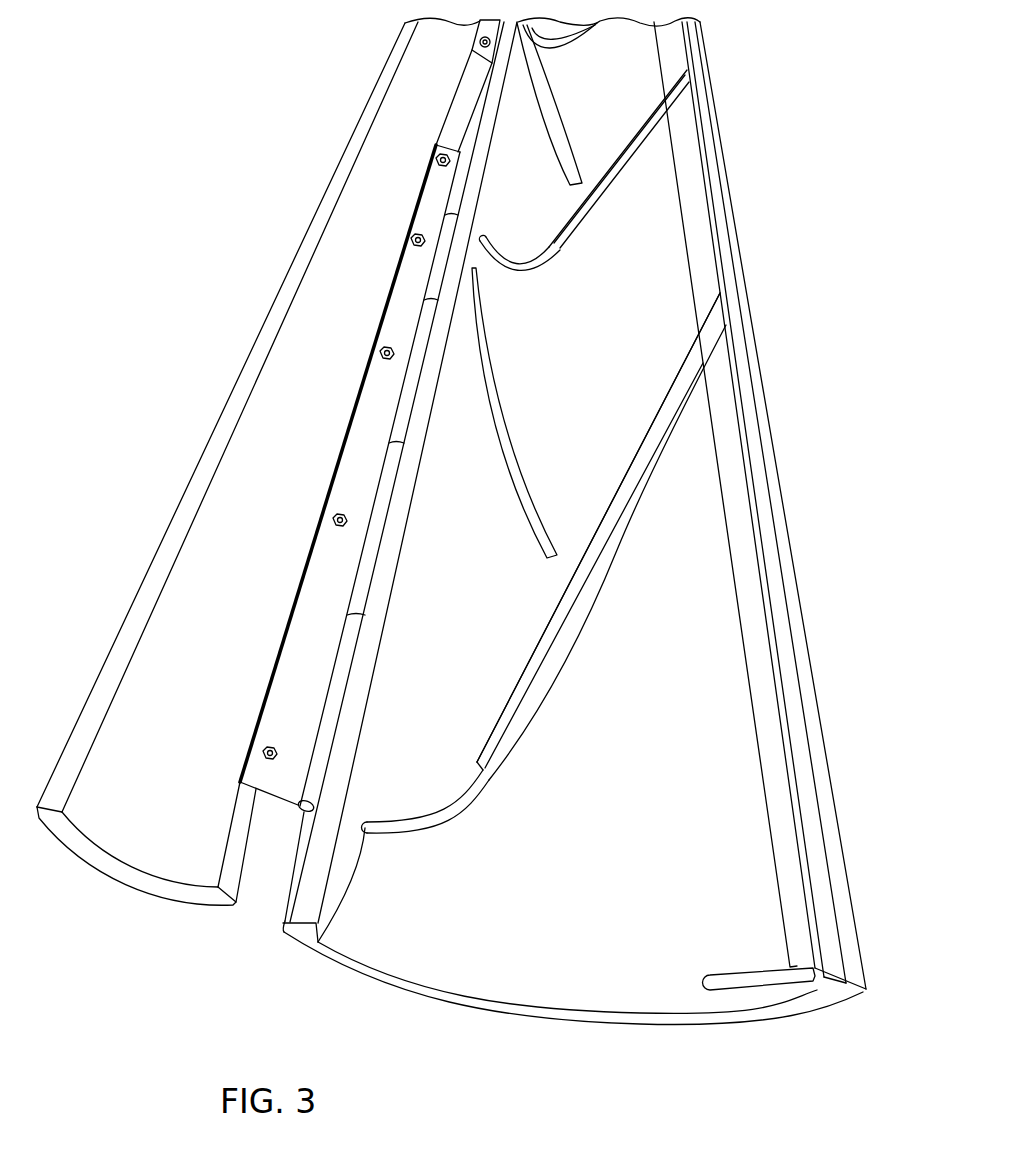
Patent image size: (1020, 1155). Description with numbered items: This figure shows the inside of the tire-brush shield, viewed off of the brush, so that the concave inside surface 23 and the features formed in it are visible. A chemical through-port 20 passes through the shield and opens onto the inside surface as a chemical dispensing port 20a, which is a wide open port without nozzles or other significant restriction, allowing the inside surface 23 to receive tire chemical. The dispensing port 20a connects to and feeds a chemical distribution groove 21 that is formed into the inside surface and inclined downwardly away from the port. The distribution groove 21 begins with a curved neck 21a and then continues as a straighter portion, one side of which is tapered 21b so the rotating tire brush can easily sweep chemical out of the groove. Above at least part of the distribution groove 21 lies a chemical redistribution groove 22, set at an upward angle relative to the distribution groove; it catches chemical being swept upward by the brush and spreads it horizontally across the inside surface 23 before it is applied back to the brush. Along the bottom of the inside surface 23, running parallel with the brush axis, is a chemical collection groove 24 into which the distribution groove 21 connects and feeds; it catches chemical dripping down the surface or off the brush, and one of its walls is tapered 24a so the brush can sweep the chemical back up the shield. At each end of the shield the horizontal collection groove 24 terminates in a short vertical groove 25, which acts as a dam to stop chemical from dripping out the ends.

The chemical through-port 20 is at (330, 935).
The chemical dispensing port 20a is at (367, 822).
The chemical distribution groove 21 is at (612, 190).
The curved neck 21a is at (523, 268).
The tapered side 21b is at (525, 682).
The chemical redistribution groove 22 is at (545, 118).
The concave inside surface 23 is at (597, 933).
The chemical collection groove 24 is at (790, 672).
The tapered wall 24a is at (778, 817).
The short vertical groove 25 is at (797, 975).